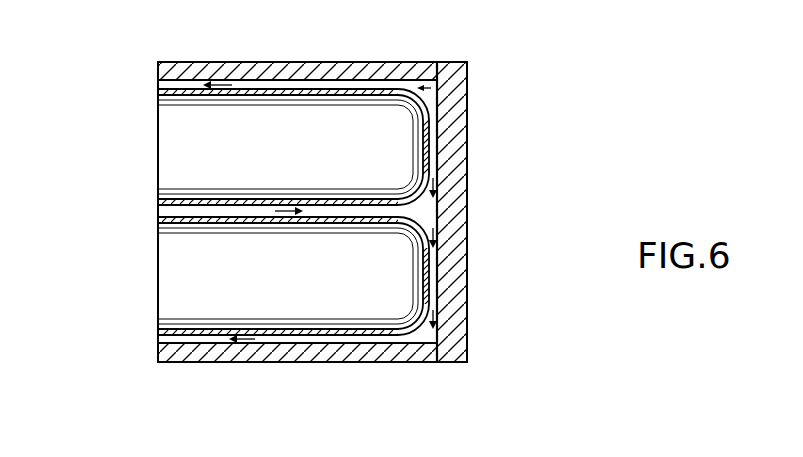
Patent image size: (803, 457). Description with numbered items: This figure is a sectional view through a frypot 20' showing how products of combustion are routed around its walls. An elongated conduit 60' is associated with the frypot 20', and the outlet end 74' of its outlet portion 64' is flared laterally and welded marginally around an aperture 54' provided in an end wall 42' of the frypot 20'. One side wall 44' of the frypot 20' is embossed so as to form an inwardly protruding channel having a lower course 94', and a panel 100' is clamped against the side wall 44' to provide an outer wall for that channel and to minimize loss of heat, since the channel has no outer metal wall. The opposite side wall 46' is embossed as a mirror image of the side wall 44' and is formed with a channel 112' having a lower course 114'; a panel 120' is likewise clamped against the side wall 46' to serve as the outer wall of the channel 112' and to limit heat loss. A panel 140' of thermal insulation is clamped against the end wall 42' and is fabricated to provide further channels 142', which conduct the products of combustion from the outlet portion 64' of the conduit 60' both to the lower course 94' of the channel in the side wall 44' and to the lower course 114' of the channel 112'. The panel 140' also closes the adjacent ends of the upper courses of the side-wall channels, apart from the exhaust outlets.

The frypot 20' is at (292, 181).
The end wall 42' is at (295, 147).
The side wall 44' is at (288, 279).
The side wall 46' is at (259, 119).
The aperture 54' is at (294, 276).
The elongated conduit 60' is at (278, 242).
The outlet portion 64' is at (297, 241).
The outlet end 74' is at (392, 180).
The lower course 94' is at (333, 365).
The panel 100' is at (297, 385).
The channel 112' is at (288, 101).
The lower course 114' is at (293, 107).
The panel 120' is at (297, 44).
The panel of thermal insulation 140' is at (510, 212).
The further channels 142' is at (500, 220).